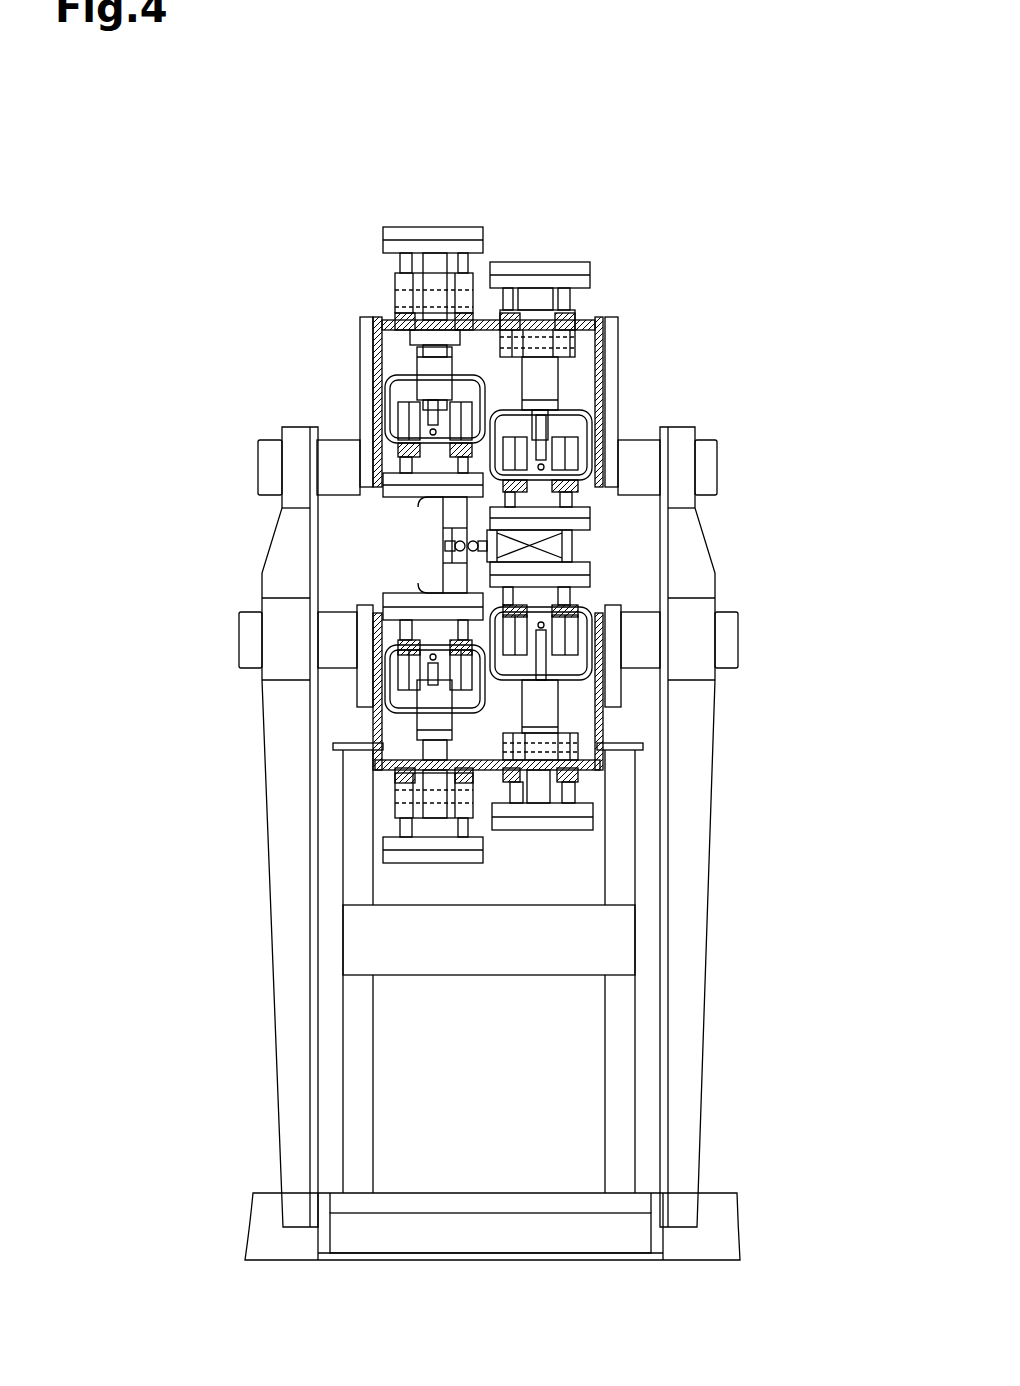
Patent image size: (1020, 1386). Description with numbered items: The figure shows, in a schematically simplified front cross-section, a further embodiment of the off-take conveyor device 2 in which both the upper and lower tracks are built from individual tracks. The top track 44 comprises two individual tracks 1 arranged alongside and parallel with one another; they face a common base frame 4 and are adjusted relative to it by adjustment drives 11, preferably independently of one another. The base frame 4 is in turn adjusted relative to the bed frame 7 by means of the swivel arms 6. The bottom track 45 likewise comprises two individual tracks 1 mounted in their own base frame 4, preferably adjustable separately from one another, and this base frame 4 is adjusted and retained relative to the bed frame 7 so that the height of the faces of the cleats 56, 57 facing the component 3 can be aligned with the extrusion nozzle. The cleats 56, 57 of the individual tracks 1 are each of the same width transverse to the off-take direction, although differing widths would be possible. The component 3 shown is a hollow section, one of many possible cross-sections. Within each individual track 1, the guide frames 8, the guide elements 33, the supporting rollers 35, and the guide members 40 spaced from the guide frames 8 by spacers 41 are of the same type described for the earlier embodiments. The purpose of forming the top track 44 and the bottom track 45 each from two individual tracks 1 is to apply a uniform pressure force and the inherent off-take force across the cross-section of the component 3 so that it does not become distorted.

The individual track 1 is at (420, 200).
The off-take conveyor device 2 is at (710, 204).
The component 3 is at (573, 542).
The base frame 4 is at (602, 316).
The swivel arm 6 is at (295, 1053).
The bed frame 7 is at (627, 1042).
The guide frame 8 is at (383, 375).
The adjustment drive 11 is at (392, 356).
The guide element 33 is at (396, 430).
The supporting roller 35 is at (568, 453).
The guide member 40 is at (398, 282).
The spacer 41 is at (438, 268).
The top track 44 is at (272, 273).
The bottom track 45 is at (362, 873).
The cleat 56 is at (402, 230).
The cleat 57 is at (572, 272).